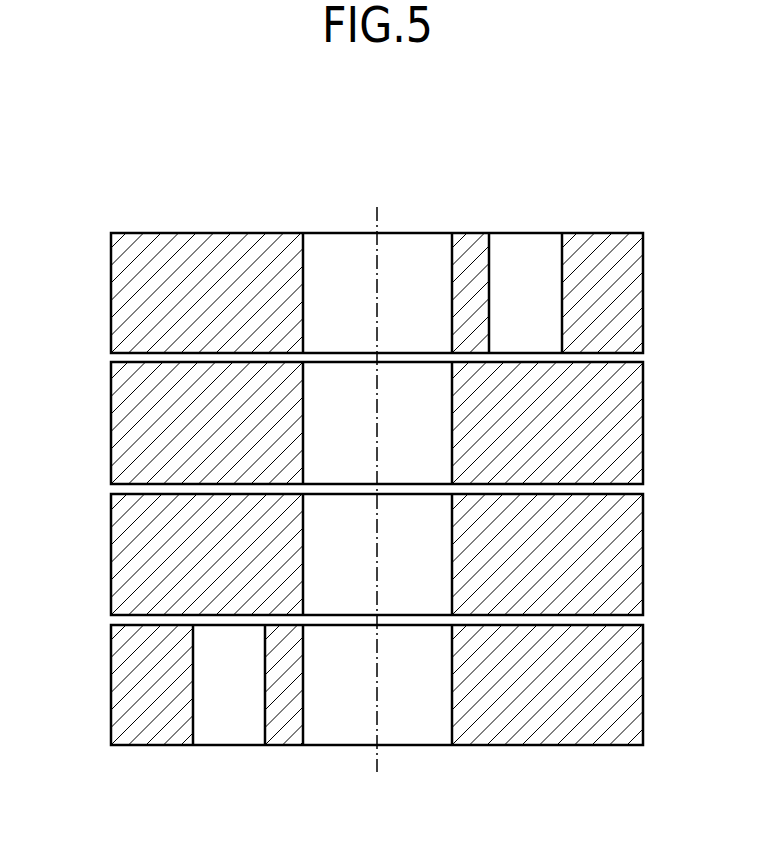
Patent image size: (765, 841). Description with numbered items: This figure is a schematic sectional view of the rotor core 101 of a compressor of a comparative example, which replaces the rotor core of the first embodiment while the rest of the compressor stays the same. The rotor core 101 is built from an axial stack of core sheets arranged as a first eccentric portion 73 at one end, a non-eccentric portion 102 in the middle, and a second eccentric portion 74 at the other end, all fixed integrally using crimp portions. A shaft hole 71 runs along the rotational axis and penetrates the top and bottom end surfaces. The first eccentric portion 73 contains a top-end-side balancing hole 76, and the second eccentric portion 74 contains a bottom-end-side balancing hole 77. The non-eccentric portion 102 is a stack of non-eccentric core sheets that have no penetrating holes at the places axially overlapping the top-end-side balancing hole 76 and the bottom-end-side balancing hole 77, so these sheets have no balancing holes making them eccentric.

The rotor core 101 is at (586, 151).
The first eccentric portion 73 is at (108, 233).
The non-eccentric portion 102 is at (108, 362).
The second eccentric portion 74 is at (108, 625).
The shaft hole 71 is at (412, 247).
The top-end-side balancing hole 76 is at (522, 248).
The bottom-end-side balancing hole 77 is at (229, 727).